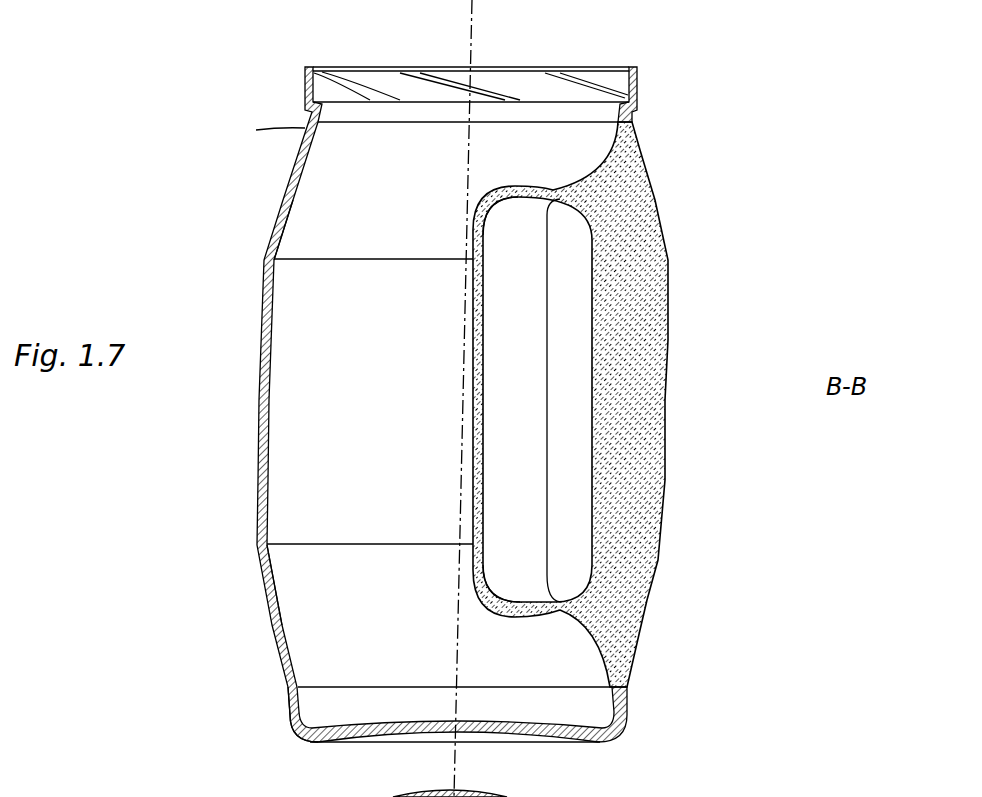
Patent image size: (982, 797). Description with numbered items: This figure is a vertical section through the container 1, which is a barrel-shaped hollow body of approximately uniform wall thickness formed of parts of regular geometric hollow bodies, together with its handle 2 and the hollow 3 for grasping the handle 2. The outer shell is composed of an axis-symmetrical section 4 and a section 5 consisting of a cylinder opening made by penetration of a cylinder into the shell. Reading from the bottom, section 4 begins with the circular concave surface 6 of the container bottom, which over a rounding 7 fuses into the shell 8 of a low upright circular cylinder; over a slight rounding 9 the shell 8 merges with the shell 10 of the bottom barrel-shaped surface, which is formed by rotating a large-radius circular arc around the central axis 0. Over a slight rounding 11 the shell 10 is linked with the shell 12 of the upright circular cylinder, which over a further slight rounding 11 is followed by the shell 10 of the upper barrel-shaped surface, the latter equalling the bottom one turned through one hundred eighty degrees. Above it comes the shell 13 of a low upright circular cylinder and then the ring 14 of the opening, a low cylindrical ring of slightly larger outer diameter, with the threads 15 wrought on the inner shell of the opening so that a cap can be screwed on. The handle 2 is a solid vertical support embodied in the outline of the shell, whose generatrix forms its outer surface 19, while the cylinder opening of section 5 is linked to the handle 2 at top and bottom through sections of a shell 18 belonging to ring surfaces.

The central axis 0 is at (472, 22).
The container 1 is at (387, 404).
The handle 2 is at (631, 404).
The hollow 3 is at (572, 484).
The section of outer shell 4 is at (406, 404).
The section of outer shell 5 is at (585, 407).
The circular concave surface 6 is at (385, 733).
The rounding 7 is at (293, 738).
The shell of low upright circular cylinder 8 is at (290, 704).
The slight rounding 9 is at (290, 688).
The shell of barrel-shaped surface 10 is at (285, 185).
The slight rounding 11 is at (266, 258).
The shell of upright circular cylinder 12 is at (258, 463).
The shell of low upright circular cylinder 13 is at (310, 112).
The ring of the opening 14 is at (305, 85).
The threads 15 is at (430, 68).
The shell sections 18 is at (530, 198).
The outer surface of handle 19 is at (668, 340).